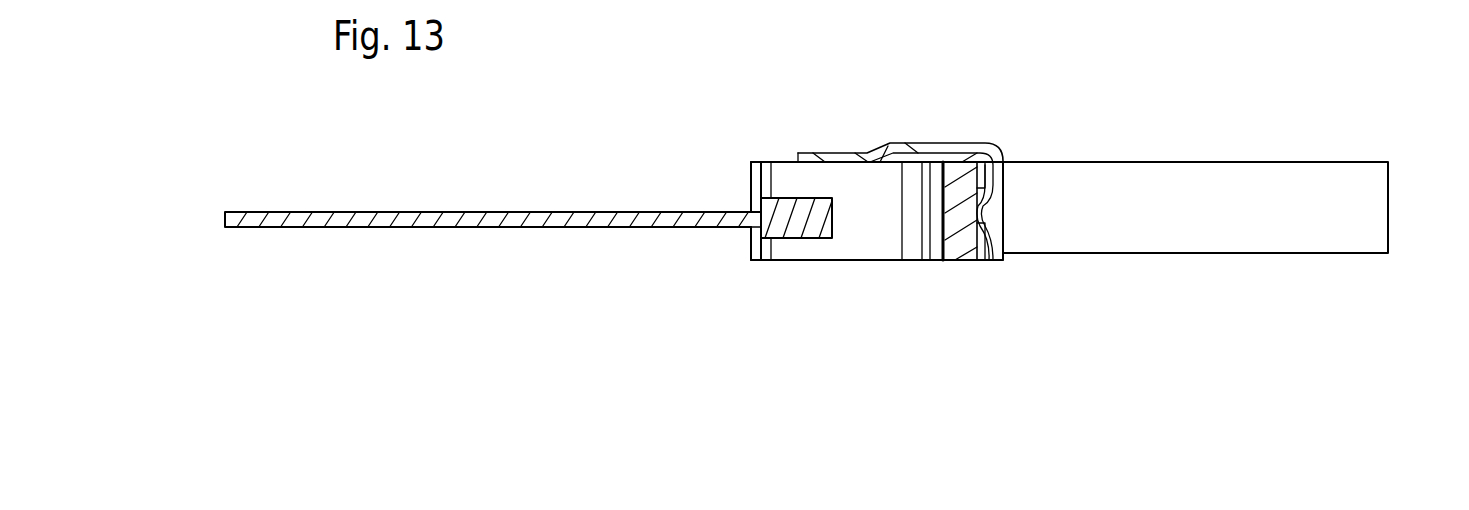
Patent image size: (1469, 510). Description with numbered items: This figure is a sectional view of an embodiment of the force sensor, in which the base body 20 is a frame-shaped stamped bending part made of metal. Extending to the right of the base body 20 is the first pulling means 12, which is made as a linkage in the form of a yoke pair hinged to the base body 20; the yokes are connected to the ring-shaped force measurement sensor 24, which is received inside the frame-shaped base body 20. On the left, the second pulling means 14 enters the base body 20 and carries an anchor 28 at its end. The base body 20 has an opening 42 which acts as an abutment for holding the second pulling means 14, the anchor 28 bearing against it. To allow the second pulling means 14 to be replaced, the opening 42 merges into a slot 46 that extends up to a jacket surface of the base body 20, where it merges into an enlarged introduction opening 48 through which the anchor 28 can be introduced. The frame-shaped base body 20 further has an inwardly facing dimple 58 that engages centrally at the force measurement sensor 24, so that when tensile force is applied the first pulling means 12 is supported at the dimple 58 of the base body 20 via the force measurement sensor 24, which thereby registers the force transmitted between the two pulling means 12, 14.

The first pulling means 12 is at (1185, 173).
The second pulling means 14 is at (381, 212).
The base body 20 is at (877, 230).
The force measurement sensor 24 is at (962, 235).
The anchor 28 is at (803, 232).
The opening 42 is at (752, 228).
The slot 46 is at (757, 176).
The introduction opening 48 is at (781, 152).
The dimple 58 is at (1000, 215).